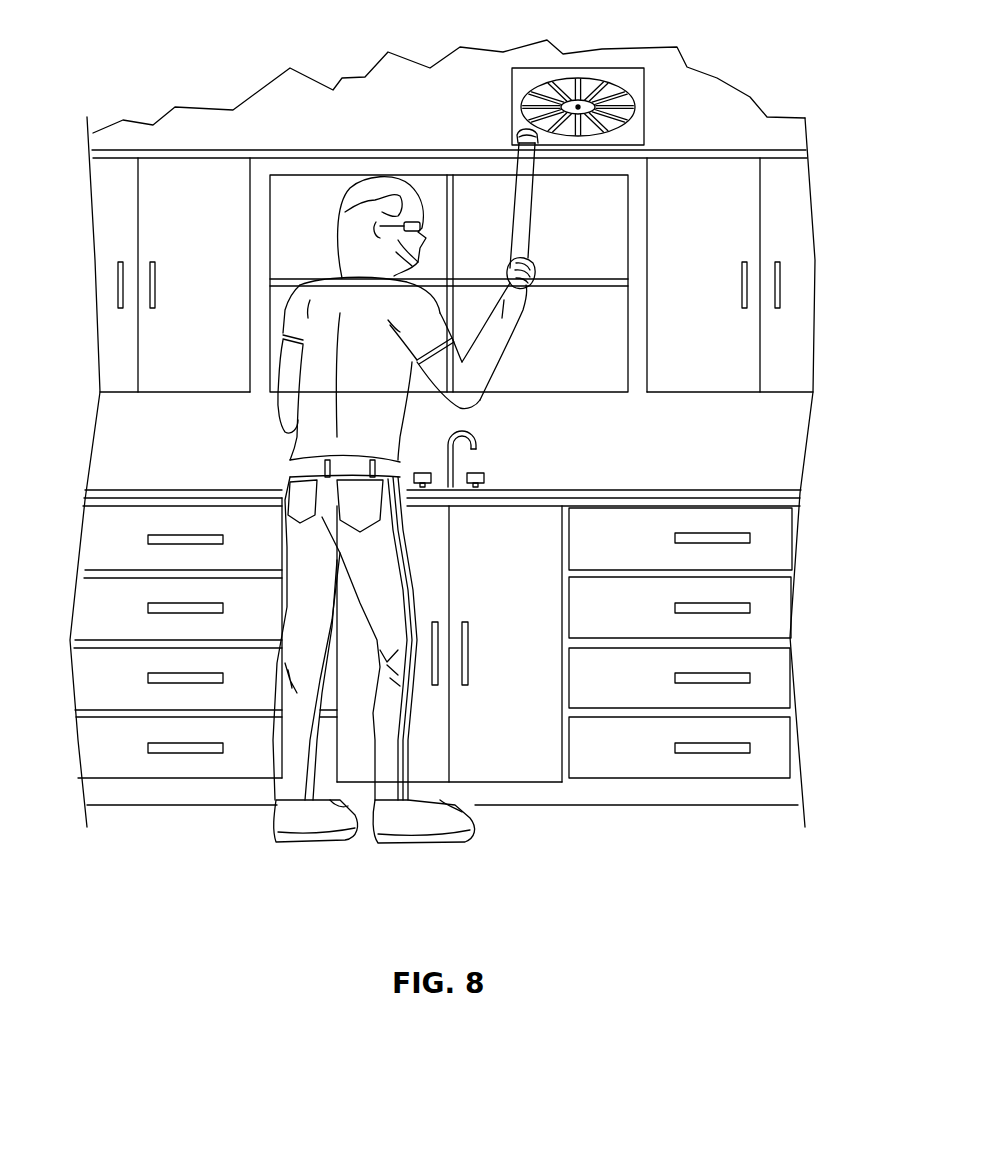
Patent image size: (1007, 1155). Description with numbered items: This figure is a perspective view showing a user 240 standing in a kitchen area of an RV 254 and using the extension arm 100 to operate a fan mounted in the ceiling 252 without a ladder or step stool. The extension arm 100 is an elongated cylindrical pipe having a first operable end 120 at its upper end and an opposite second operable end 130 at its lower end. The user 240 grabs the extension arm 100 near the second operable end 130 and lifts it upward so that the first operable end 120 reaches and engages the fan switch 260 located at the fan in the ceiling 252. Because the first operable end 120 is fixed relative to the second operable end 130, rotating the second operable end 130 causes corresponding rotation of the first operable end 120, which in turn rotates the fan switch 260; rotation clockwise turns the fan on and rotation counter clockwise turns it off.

The extension arm 100 is at (591, 223).
The first operable end 120 is at (537, 151).
The second operable end 130 is at (500, 261).
The user 240 is at (488, 445).
The ceiling 252 is at (600, 70).
The RV 254 is at (757, 53).
The fan switch 260 is at (500, 125).